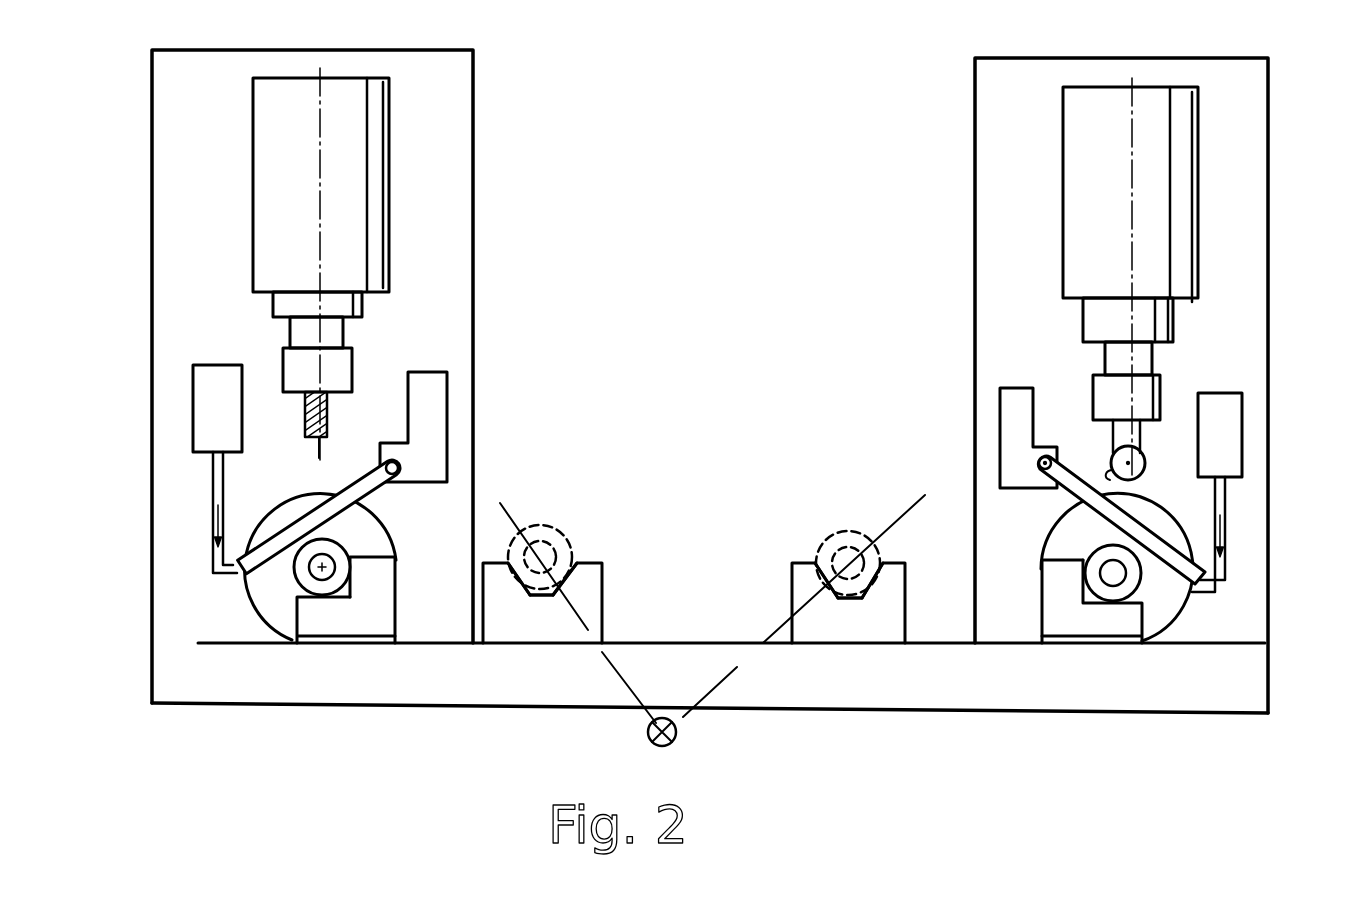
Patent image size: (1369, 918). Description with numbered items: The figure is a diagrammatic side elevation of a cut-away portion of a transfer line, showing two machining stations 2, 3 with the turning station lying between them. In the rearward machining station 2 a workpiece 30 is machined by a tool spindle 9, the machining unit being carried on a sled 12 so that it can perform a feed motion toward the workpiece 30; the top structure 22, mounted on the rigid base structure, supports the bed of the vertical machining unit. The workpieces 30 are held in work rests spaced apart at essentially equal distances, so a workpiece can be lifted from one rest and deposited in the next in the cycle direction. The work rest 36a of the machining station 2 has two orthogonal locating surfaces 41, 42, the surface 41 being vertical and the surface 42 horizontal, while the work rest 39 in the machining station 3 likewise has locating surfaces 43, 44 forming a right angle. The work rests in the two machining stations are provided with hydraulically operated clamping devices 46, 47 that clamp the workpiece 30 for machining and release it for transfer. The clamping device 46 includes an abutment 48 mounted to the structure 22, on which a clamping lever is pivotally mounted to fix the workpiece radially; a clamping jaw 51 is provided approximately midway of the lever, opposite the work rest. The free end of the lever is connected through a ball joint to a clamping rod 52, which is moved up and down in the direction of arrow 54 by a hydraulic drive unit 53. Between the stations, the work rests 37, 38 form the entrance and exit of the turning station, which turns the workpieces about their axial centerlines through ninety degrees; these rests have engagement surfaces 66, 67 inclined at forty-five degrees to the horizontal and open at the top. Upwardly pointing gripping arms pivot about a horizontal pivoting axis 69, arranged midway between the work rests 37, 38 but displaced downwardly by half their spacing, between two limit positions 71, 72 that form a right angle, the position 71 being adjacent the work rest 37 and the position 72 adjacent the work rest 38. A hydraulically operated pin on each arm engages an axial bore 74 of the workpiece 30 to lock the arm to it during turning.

The machining station 2 is at (477, 155).
The machining station 3 is at (1290, 135).
The tool spindle 9 is at (354, 352).
The sled 12 is at (345, 535).
The top structure 22 is at (345, 264).
The workpiece 30 is at (296, 512).
The support surface 36a is at (388, 580).
The work rest 37 is at (592, 575).
The work rest 38 is at (897, 582).
The work rest 39 is at (1052, 630).
The locating surface 41 is at (358, 570).
The locating surface 42 is at (323, 598).
The locating surface 43 is at (1083, 578).
The locating surface 44 is at (1090, 607).
The clamping device 46 is at (367, 407).
The clamping device 47 is at (1058, 353).
The abutment 48 is at (440, 420).
The clamping jaw 51 is at (304, 548).
The clamping rod 52 is at (213, 492).
The hydraulic drive unit 53 is at (205, 412).
The arrow 54 is at (183, 608).
The engagement surface 66 is at (565, 576).
The engagement surface 67 is at (512, 585).
The pivoting axis 69 is at (675, 735).
The limit position 71 is at (500, 503).
The limit position 72 is at (903, 513).
The axial bore 74 is at (538, 565).